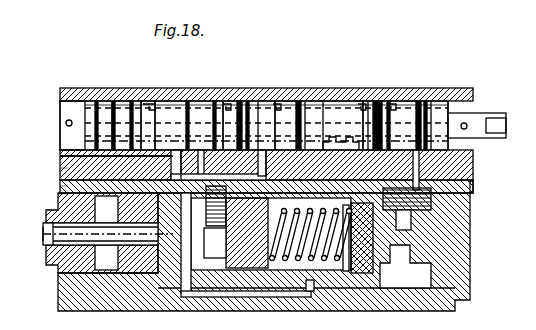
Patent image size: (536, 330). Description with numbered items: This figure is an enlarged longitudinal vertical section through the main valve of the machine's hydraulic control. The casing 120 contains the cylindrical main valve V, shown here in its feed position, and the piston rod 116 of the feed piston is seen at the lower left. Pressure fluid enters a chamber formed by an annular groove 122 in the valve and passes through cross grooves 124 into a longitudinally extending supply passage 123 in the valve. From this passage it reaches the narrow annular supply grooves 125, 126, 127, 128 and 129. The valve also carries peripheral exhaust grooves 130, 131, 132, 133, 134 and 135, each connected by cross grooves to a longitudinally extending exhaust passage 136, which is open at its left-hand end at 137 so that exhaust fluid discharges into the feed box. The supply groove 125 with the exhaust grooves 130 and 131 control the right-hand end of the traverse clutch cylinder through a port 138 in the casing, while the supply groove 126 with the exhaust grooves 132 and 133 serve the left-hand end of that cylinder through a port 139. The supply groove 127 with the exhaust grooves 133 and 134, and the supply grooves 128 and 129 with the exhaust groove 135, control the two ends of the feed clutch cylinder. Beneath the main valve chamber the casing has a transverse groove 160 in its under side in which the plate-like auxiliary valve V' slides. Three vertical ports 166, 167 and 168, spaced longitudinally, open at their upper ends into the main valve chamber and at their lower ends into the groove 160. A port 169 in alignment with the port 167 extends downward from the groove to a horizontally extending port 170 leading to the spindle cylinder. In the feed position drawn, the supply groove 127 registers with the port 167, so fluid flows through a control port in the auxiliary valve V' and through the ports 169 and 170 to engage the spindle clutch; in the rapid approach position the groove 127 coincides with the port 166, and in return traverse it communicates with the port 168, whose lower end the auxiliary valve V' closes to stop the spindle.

The piston rod 116 is at (42, 237).
The casing 120 is at (292, 81).
The annular groove 122 is at (354, 81).
The supply passage 123 is at (360, 81).
The cross grooves 124 is at (345, 121).
The supply groove 125 is at (424, 81).
The supply groove 126 is at (242, 76).
The supply groove 127 is at (180, 81).
The supply groove 128 is at (123, 81).
The supply groove 129 is at (88, 81).
The exhaust groove 130 is at (448, 81).
The exhaust groove 131 is at (387, 81).
The exhaust groove 132 is at (265, 81).
The exhaust groove 133 is at (215, 81).
The exhaust groove 134 is at (144, 81).
The exhaust groove 135 is at (104, 81).
The exhaust passage 136 is at (319, 81).
The open end of exhaust passage 137 is at (52, 104).
The port 138 is at (448, 162).
The port 139 is at (256, 157).
The transverse groove 160 is at (200, 155).
The vertical port 166 is at (60, 147).
The vertical port 167 is at (60, 154).
The vertical port 168 is at (62, 168).
The port 169 is at (170, 290).
The horizontally extending port 170 is at (197, 290).
The auxiliary valve V' is at (49, 200).